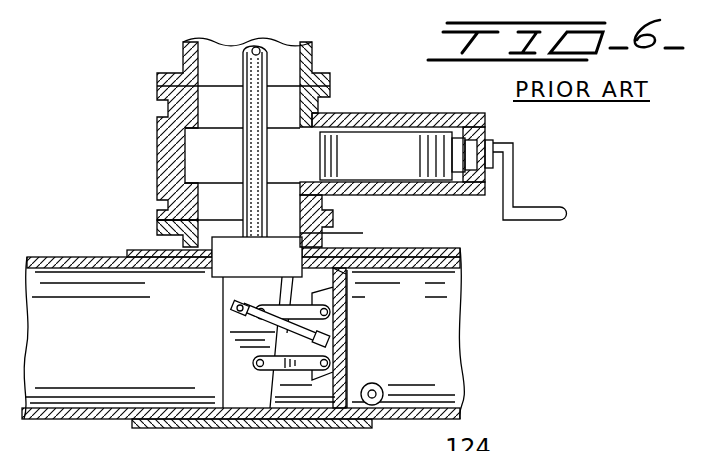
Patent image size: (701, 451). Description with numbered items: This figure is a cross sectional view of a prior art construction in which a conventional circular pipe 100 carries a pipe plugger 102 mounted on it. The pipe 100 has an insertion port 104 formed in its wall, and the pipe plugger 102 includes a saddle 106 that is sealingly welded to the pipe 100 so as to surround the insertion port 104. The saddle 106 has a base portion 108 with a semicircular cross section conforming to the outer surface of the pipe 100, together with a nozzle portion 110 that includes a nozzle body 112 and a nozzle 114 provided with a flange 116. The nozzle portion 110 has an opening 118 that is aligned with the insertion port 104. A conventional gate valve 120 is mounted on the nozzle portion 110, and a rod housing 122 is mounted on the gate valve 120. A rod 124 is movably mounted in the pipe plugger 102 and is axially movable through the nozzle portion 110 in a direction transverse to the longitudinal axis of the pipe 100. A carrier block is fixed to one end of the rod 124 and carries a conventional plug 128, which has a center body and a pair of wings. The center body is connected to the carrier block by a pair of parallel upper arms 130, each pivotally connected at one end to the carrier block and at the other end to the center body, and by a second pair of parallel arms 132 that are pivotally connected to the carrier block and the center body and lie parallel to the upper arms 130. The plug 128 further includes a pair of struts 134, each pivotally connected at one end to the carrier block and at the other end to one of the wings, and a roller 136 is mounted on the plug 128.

The circular pipe 100 is at (468, 256).
The pipe plugger 102 is at (152, 150).
The insertion port 104 is at (215, 295).
The saddle 106 is at (136, 250).
The base portion 108 is at (258, 420).
The nozzle portion 110 is at (308, 249).
The nozzle body 112 is at (335, 252).
The nozzle 114 is at (312, 235).
The flange 116 is at (157, 227).
The opening 118 is at (286, 228).
The gate valve 120 is at (153, 165).
The rod housing 122 is at (309, 51).
The rod 124 is at (258, 48).
The plug 128 is at (355, 328).
The upper arms 130 is at (257, 322).
The second arms 132 is at (268, 365).
The struts 134 is at (258, 318).
The roller 136 is at (372, 384).